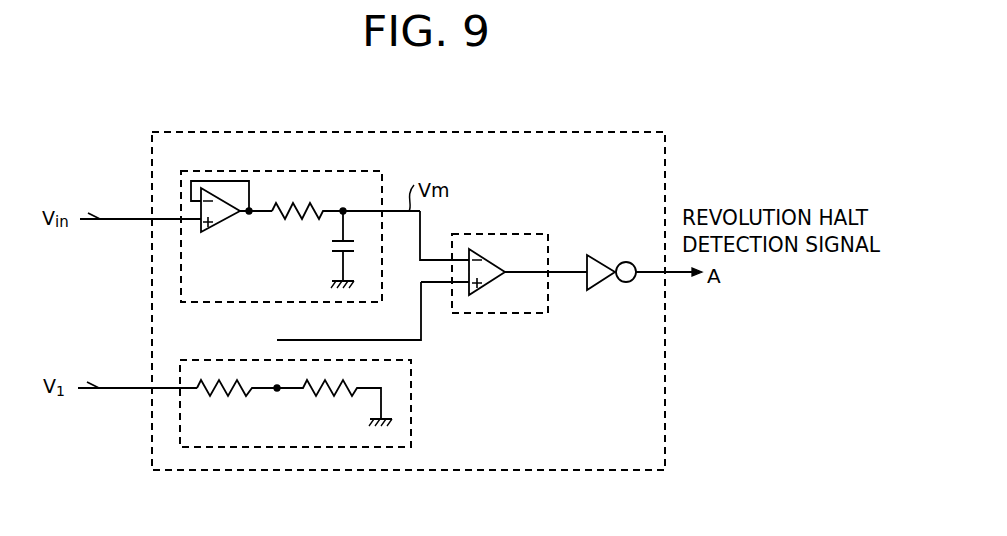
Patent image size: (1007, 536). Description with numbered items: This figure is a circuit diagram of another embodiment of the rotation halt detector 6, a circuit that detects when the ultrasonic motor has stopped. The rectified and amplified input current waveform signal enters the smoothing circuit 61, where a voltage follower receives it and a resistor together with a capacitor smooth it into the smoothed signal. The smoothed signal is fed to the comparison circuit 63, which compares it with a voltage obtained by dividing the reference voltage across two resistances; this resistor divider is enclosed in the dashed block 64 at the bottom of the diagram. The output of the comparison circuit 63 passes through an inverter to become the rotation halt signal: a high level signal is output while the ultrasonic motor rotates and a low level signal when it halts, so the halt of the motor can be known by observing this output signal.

The rotation halt detector 6 is at (163, 131).
The smoothing circuit 61 is at (224, 171).
The comparison circuit 63 is at (511, 234).
The voltage divider (R61, R62) 64 is at (412, 392).